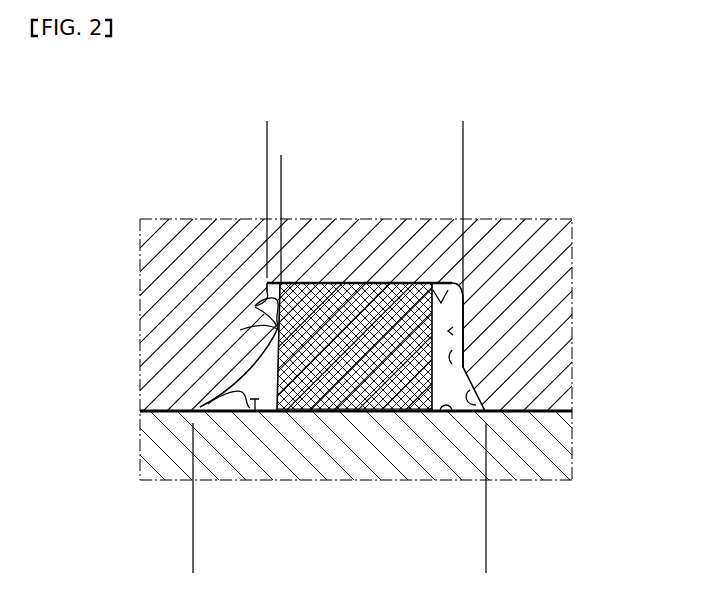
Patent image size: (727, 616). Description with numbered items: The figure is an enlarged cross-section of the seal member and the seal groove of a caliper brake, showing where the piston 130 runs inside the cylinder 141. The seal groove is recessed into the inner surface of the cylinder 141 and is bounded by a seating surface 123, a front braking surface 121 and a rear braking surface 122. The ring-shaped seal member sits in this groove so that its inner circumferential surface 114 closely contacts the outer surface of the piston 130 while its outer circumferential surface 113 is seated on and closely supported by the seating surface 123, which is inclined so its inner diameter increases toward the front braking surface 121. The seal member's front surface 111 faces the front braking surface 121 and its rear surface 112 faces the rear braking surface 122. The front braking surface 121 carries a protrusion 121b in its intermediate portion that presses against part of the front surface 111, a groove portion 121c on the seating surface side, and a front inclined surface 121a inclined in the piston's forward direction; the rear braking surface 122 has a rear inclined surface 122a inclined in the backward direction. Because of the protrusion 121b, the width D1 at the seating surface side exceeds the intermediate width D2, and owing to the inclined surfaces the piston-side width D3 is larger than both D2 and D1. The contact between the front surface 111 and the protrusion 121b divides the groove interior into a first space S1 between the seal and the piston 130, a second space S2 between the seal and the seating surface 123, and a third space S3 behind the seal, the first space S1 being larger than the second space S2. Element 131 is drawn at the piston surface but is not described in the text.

The front surface 111 is at (273, 413).
The rear surface 112 is at (463, 307).
The outer circumferential surface 113 is at (340, 283).
The inner circumferential surface 114 is at (395, 410).
The front braking surface 121 is at (78, 280).
The front inclined surface 121a is at (205, 408).
The protrusion 121b is at (240, 330).
The groove portion 121c is at (255, 306).
The rear braking surface 122 is at (452, 330).
The rear inclined surface 122a is at (480, 400).
The seating surface 123 is at (433, 290).
The piston 130 is at (533, 458).
The bump 131 is at (460, 413).
The cylinder 141 is at (545, 258).
The first space S1 is at (255, 402).
The second space S2 is at (265, 288).
The third space S3 is at (448, 353).
The width of the seating surface side D1 is at (463, 132).
The width of the intermediate portion D2 is at (463, 165).
The width of the piston side D3 is at (486, 563).